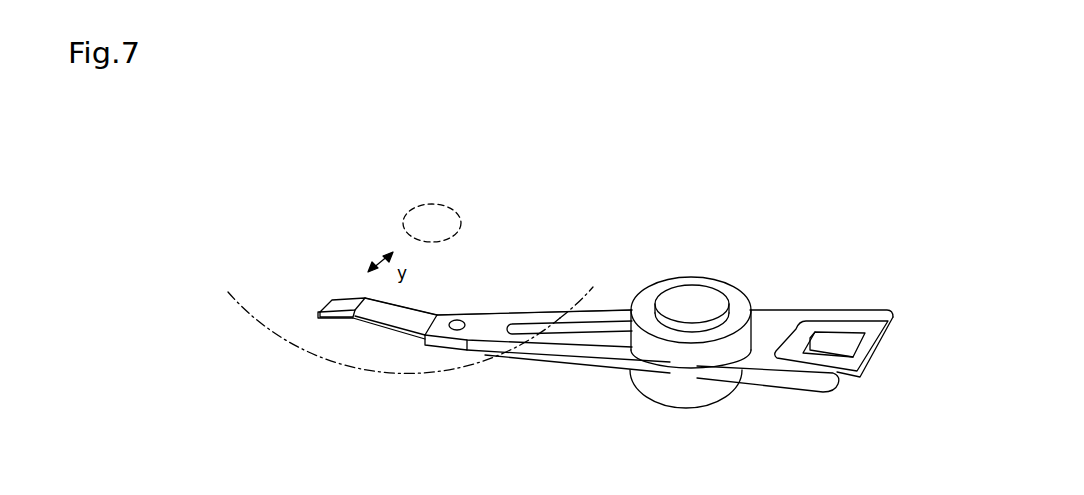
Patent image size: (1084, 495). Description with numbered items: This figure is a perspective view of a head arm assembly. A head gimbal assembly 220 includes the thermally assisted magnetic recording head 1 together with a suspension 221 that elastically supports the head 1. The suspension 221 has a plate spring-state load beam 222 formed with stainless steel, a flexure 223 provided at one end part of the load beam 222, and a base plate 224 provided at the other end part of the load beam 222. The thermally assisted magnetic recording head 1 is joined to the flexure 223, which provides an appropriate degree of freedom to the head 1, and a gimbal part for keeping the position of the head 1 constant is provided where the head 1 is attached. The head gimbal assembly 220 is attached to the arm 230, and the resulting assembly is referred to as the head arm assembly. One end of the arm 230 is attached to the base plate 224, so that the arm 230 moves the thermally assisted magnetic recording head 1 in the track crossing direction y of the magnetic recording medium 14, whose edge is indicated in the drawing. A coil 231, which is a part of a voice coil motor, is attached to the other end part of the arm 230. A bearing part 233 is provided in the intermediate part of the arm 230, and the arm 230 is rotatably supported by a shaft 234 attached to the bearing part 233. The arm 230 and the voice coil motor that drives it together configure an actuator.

The thermally assisted magnetic recording head 1 is at (348, 302).
The magnetic recording medium 14 is at (355, 369).
The head gimbal assembly 220 is at (415, 348).
The suspension 221 is at (590, 282).
The load beam 222 is at (432, 313).
The flexure 223 is at (330, 308).
The base plate 224 is at (482, 313).
The arm 230 is at (542, 357).
The coil 231 is at (880, 362).
The bearing part 233 is at (648, 296).
The shaft 234 is at (700, 295).